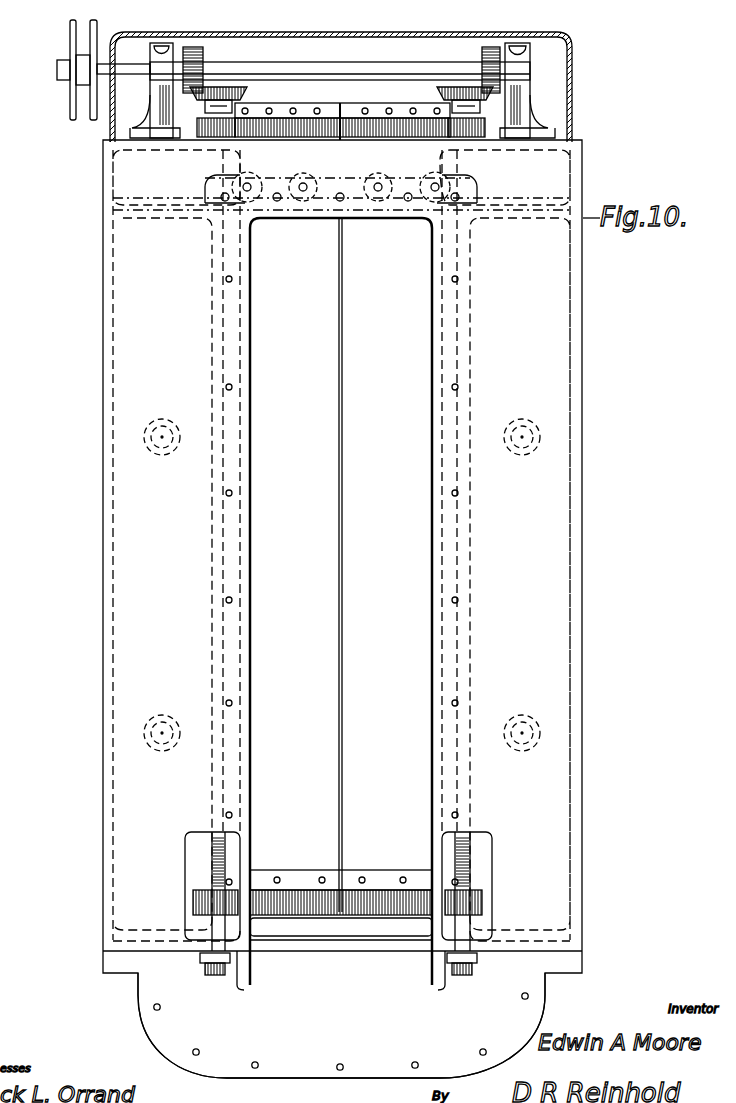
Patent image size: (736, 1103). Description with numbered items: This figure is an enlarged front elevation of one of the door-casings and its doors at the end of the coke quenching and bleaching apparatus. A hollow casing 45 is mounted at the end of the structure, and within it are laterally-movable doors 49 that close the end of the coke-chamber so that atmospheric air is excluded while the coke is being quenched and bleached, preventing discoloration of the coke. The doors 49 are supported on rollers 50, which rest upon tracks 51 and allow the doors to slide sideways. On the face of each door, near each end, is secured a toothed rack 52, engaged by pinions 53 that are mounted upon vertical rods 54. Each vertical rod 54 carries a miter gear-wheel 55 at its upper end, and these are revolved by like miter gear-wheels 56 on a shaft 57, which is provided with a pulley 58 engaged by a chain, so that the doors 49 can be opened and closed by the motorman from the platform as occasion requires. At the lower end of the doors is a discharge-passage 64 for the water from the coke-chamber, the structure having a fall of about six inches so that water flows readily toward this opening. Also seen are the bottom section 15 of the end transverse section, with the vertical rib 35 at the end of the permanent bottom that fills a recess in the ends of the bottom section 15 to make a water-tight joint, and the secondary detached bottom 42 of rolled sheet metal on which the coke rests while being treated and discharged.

The bottom section 15 is at (341, 1025).
The vertical rib 35 is at (361, 555).
The secondary detached bottom 42 is at (395, 938).
The hollow casing 45 is at (341, 517).
The laterally-movable door 49 is at (341, 604).
The roller 50 is at (250, 196).
The track 51 is at (298, 200).
The toothed rack 52 is at (290, 120).
The pinion 53 is at (197, 122).
The vertical rod 54 is at (212, 852).
The miter gear-wheel 55 is at (216, 86).
The miter gear-wheel 56 is at (185, 62).
The shaft 57 is at (370, 58).
The pulley 58 is at (72, 40).
The discharge-passage 64 is at (316, 922).